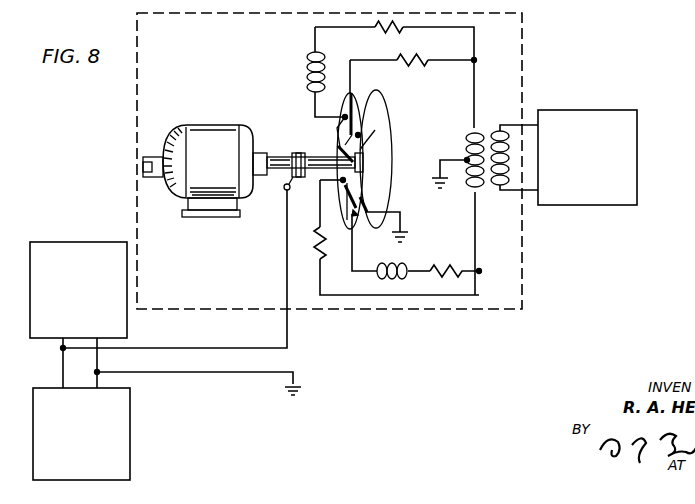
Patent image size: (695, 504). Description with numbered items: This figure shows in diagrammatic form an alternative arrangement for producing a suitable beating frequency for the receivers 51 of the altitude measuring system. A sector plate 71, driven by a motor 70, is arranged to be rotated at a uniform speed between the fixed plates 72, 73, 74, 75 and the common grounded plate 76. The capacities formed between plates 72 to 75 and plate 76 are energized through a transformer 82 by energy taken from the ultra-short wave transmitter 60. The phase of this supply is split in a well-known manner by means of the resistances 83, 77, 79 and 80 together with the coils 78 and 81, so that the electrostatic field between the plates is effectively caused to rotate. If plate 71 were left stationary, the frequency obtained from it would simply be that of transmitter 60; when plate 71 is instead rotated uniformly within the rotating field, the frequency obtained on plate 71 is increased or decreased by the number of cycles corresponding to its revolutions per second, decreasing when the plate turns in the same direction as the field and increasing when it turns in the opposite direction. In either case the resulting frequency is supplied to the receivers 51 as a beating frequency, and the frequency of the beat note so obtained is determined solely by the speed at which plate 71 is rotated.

The receiver 51 is at (91, 242).
The ultra-short wave transmitter 60 is at (637, 132).
The motor 70 is at (208, 128).
The sector plate 71 is at (380, 152).
The plate 72 is at (360, 120).
The plate 73 is at (338, 128).
The plate 74 is at (338, 190).
The plate 75 is at (356, 220).
The common grounded plate 76 is at (392, 171).
The resistance 77 is at (425, 55).
The coil 78 is at (305, 70).
The resistance 79 is at (322, 248).
The resistance 80 is at (447, 268).
The coil 81 is at (396, 268).
The transformer 82 is at (489, 127).
The resistance 83 is at (378, 33).